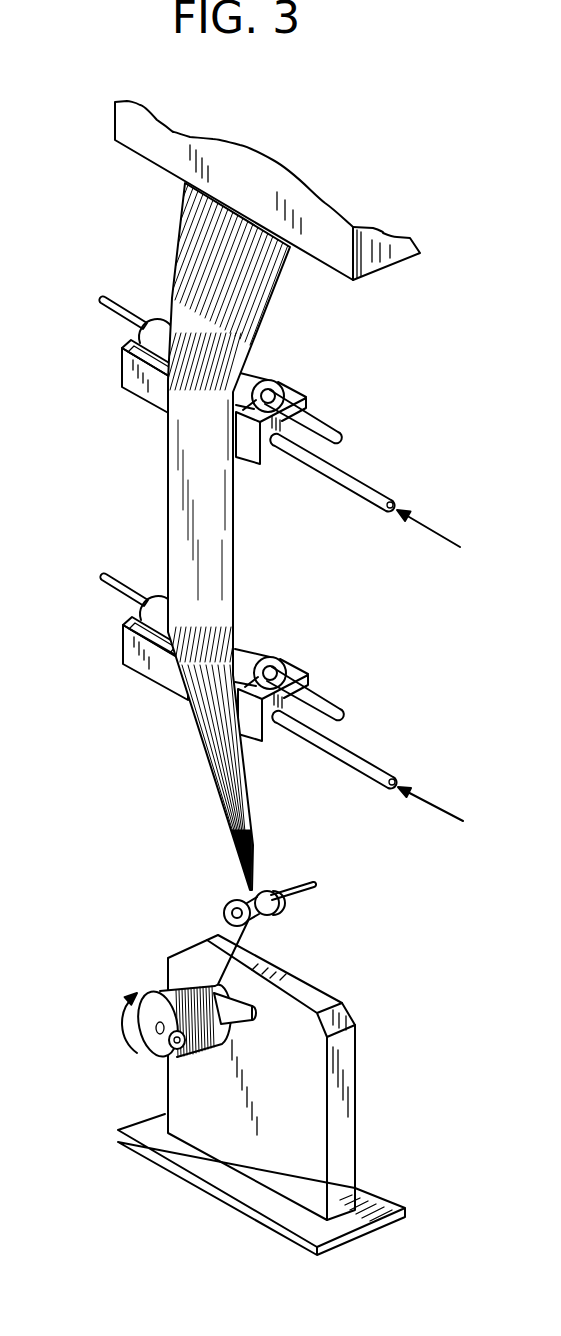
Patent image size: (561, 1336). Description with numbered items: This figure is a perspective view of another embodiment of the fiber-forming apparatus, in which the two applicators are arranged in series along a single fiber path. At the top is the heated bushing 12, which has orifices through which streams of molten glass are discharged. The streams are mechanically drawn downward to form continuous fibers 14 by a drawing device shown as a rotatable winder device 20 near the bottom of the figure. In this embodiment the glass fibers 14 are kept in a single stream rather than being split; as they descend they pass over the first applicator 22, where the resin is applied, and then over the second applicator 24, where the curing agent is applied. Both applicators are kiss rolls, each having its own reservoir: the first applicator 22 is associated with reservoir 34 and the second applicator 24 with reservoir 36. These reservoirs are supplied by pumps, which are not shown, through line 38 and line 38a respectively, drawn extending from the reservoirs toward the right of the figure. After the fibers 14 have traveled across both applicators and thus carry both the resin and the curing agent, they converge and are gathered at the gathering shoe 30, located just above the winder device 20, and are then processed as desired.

The heated bushing 12 is at (320, 210).
The continuous fibers 14 is at (178, 238).
The winder device 20 is at (106, 998).
The first applicator 22 is at (257, 378).
The second applicator 24 is at (250, 650).
The gathering shoe 30 is at (273, 919).
The reservoir 34 is at (270, 447).
The reservoir 36 is at (162, 672).
The line 38 is at (367, 487).
The line 38a is at (362, 757).